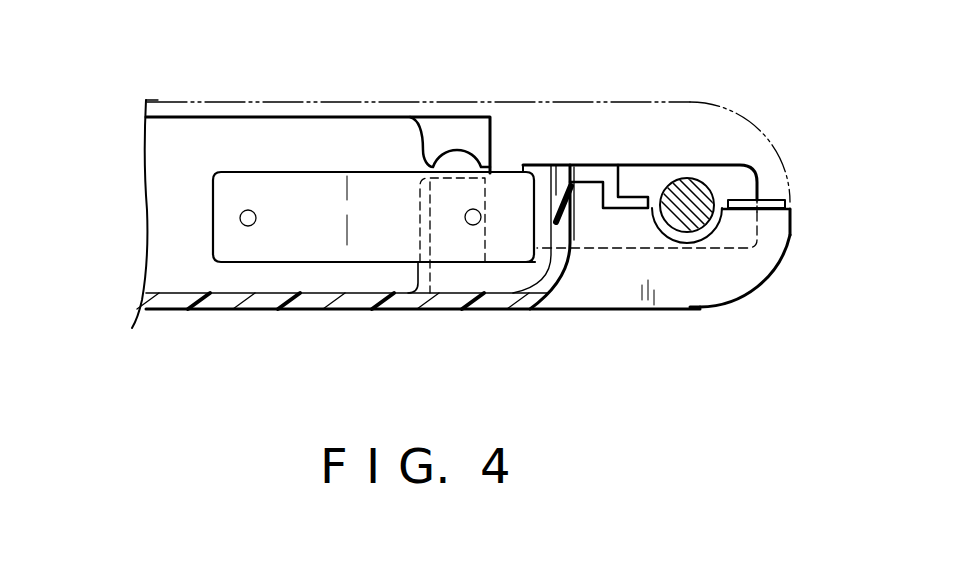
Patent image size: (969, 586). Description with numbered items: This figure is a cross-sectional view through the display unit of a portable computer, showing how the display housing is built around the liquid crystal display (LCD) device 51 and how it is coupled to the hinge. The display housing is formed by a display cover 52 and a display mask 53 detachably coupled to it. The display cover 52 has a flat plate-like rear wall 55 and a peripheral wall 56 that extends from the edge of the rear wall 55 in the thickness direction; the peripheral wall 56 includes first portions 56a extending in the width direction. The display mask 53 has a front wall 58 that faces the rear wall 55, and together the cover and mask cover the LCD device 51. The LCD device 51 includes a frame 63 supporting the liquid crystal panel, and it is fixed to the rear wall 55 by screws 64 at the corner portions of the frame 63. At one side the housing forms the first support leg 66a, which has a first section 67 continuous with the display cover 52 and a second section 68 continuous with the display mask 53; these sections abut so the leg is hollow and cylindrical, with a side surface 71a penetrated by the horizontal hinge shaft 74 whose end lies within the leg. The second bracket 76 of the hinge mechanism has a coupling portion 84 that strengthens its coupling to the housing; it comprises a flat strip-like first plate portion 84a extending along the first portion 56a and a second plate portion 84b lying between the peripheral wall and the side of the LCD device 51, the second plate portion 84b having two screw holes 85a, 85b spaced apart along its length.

The liquid crystal display (LCD) device 51 is at (172, 152).
The display cover 52 is at (441, 305).
The display mask 53 is at (458, 102).
The rear wall 55 is at (317, 303).
The peripheral wall 56 is at (578, 188).
The first portions 56a is at (573, 224).
The front wall 58 is at (203, 102).
The frame 63 is at (168, 205).
The screws 64 is at (443, 148).
The first support leg 66a is at (774, 222).
The first section 67 is at (715, 283).
The second section 68 is at (632, 101).
The side surface 71a is at (756, 268).
The hinge shaft 74 is at (708, 189).
The second bracket 76 is at (677, 165).
The coupling portion 84 is at (508, 181).
The first plate portion 84a is at (548, 195).
The second plate portion 84b is at (303, 182).
The screw hole 85a is at (248, 226).
The screw hole 85b is at (478, 224).